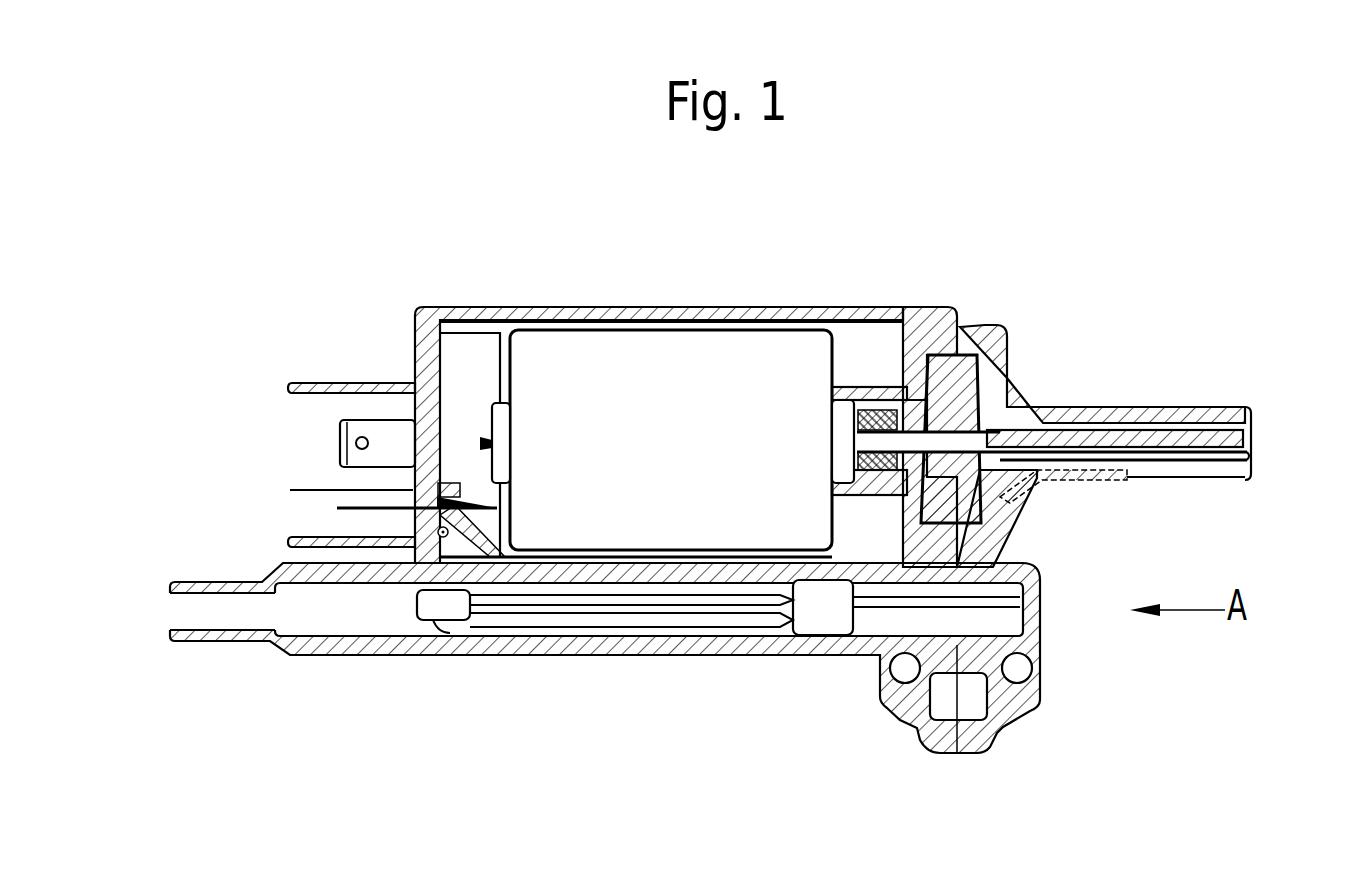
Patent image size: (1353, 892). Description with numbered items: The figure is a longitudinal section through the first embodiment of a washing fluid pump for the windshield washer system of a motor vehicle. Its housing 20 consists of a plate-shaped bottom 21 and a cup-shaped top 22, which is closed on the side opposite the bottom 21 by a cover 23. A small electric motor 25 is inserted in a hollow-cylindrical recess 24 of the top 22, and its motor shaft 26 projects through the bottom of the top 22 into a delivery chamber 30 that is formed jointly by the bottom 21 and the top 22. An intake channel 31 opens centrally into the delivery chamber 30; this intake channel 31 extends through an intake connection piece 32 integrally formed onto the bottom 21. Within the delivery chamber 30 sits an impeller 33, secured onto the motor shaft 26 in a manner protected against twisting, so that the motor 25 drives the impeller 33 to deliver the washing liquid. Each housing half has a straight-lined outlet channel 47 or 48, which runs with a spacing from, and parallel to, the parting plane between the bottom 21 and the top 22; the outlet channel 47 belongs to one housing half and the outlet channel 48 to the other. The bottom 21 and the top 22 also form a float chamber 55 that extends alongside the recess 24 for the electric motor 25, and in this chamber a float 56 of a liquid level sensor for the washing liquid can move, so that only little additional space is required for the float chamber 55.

The housing 20 is at (699, 262).
The bottom 21 is at (1007, 547).
The top 22 is at (938, 317).
The cover 23 is at (413, 373).
The hollow-cylindrical recess 24 is at (843, 337).
The electric motor 25 is at (603, 362).
The motor shaft 26 is at (907, 403).
The delivery chamber 30 is at (1007, 407).
The intake channel 31 is at (1252, 428).
The intake connection piece 32 is at (1157, 407).
The impeller 33 is at (978, 337).
The outlet channel 47 is at (1017, 668).
The outlet channel 48 is at (903, 668).
The float chamber 55 is at (750, 627).
The float 56 is at (550, 617).